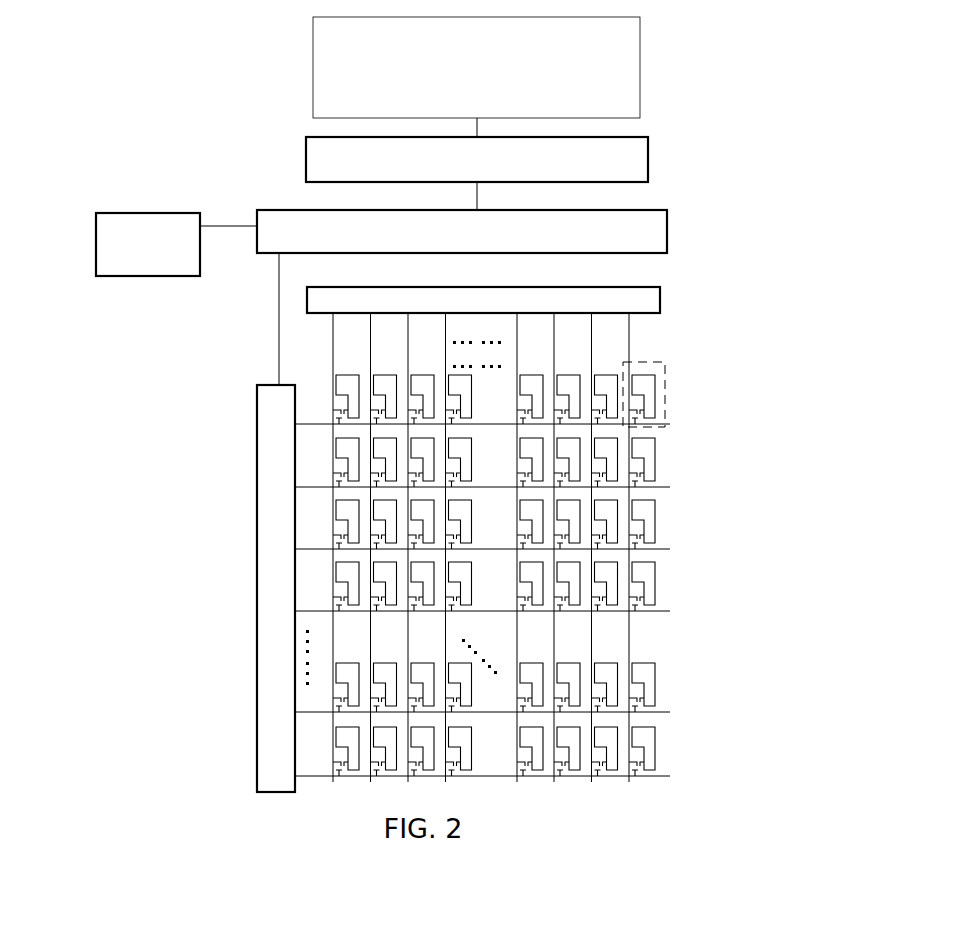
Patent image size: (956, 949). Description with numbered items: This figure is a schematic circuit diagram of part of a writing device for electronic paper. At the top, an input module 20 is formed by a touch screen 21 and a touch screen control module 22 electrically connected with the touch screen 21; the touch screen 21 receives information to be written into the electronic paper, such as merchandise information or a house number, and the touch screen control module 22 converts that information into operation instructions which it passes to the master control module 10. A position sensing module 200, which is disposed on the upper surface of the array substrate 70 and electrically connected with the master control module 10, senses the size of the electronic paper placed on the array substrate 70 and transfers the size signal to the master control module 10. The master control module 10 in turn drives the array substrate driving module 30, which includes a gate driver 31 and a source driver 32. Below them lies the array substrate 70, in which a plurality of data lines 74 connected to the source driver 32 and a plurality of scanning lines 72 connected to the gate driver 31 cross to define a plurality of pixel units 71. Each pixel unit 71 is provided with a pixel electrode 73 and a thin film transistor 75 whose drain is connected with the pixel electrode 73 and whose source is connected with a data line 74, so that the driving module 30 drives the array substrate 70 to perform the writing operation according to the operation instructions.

The master control module 10 is at (668, 216).
The input module 20 is at (528, 99).
The touch screen 21 is at (640, 68).
The touch screen control module 22 is at (506, 159).
The position sensing module 200 is at (158, 212).
The array substrate driving module 30 is at (417, 539).
The gate driver 31 is at (254, 569).
The source driver 32 is at (307, 298).
The array substrate 70 is at (514, 547).
The pixel unit 71 is at (665, 395).
The scanning line 72 is at (660, 487).
The pixel electrode 73 is at (647, 673).
The data line 74 is at (629, 344).
The thin film transistor 75 is at (637, 607).